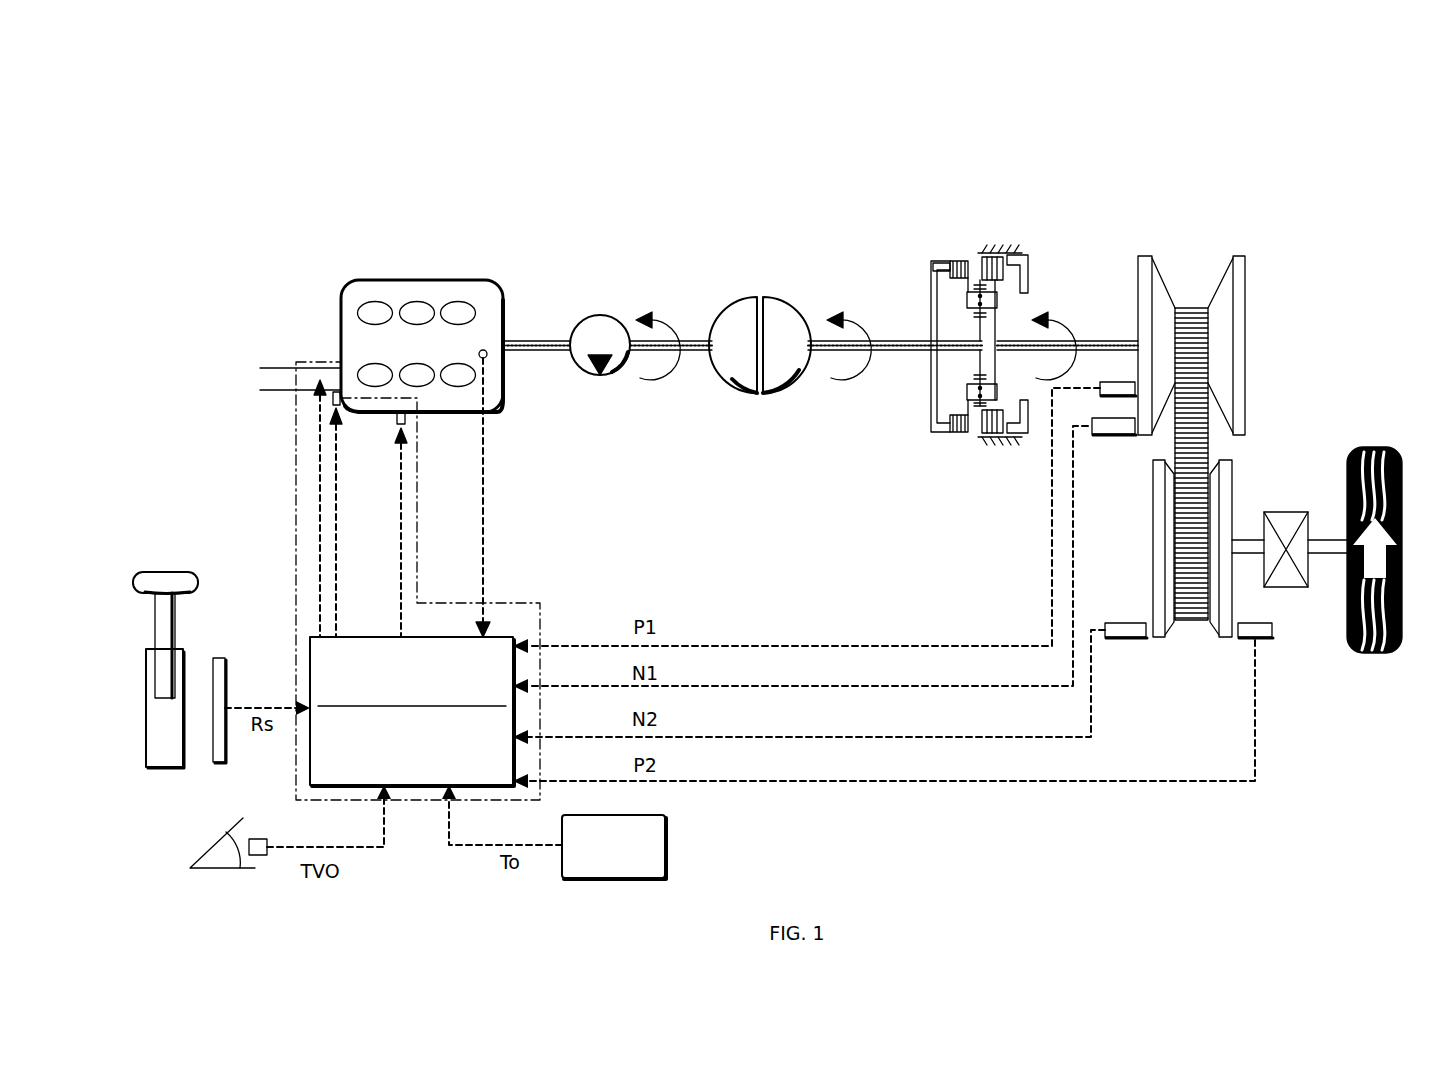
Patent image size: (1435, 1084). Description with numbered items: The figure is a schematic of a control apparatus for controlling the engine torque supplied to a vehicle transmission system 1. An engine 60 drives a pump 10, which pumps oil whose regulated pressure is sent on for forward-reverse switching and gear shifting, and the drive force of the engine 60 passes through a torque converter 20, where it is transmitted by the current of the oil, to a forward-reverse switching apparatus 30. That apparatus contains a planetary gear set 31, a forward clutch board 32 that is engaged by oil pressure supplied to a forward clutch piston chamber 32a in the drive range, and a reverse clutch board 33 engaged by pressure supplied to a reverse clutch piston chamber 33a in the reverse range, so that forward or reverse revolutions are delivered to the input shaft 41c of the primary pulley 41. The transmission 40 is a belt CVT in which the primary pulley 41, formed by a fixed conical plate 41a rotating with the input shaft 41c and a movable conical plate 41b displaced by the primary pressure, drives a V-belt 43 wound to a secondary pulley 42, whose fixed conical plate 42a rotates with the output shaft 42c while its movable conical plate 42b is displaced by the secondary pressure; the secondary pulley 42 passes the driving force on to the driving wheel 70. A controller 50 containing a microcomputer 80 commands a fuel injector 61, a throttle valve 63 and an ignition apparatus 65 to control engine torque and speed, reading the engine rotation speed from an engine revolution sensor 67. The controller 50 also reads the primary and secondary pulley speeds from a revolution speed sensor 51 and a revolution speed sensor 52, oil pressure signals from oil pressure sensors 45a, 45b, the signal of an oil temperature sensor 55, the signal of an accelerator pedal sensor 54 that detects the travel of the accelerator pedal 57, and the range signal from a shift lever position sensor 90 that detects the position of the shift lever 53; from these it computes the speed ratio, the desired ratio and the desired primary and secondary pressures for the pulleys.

The transmission system 1 is at (1086, 158).
The pump 10 is at (595, 318).
The torque converter 20 is at (782, 296).
The forward-reverse switching apparatus 30 is at (975, 313).
The planetary gear set 31 is at (978, 282).
The forward clutch board 32 is at (948, 262).
The forward clutch piston chamber 32a is at (940, 265).
The reverse clutch board 33 is at (998, 280).
The reverse clutch piston chamber 33a is at (1028, 268).
The transmission 40 is at (1181, 170).
The primary pulley 41 is at (1198, 308).
The fixed conical plate 41a is at (1237, 254).
The movable conical plate 41b is at (1140, 254).
The input shaft 41c is at (1103, 340).
The secondary pulley 42 is at (1168, 586).
The fixed conical plate 42a is at (1165, 645).
The movable conical plate 42b is at (1226, 645).
The output shaft 42c is at (1252, 553).
The V-belt 43 is at (1195, 446).
The oil pressure sensor 45a is at (1100, 390).
The oil pressure sensor 45b is at (1273, 630).
The controller 50 is at (482, 581).
The revolution speed sensor for the primary pulley 51 is at (1108, 437).
The revolution speed sensor for the secondary pulley 52 is at (1112, 640).
The shift lever 53 is at (146, 737).
The accelerator pedal sensor 54 is at (258, 839).
The oil temperature sensor 55 is at (665, 851).
The accelerator pedal 57 is at (240, 868).
The engine 60 is at (336, 296).
The fuel injector 61 is at (338, 412).
The throttle valve 63 is at (332, 388).
The ignition apparatus 65 is at (406, 418).
The engine revolution sensor 67 is at (488, 358).
The driving wheel 70 is at (1402, 463).
The microcomputer 80 is at (400, 732).
The shift lever position sensor 90 is at (218, 762).